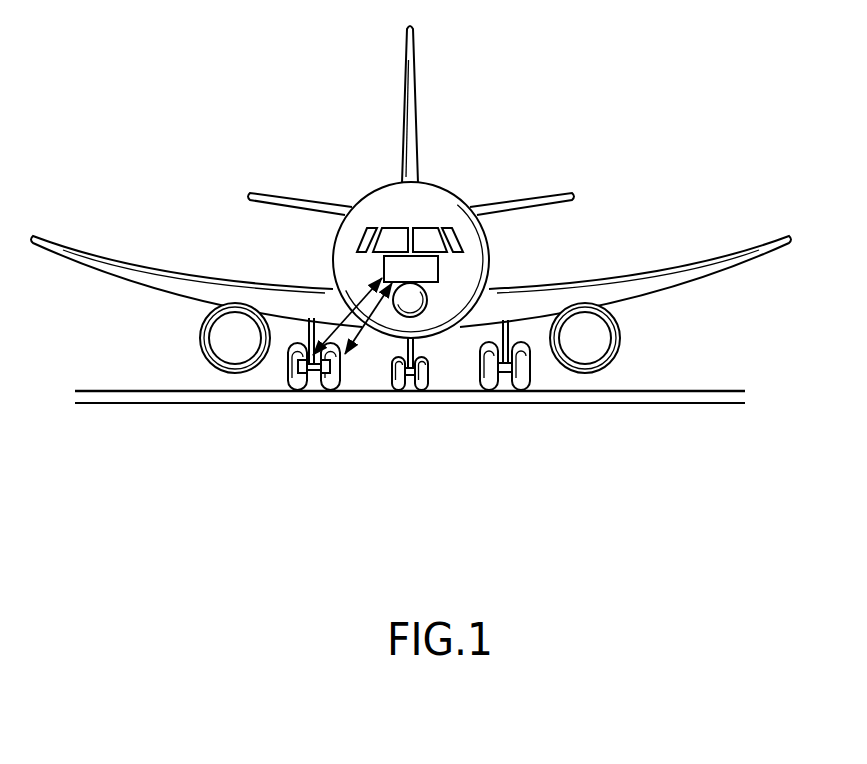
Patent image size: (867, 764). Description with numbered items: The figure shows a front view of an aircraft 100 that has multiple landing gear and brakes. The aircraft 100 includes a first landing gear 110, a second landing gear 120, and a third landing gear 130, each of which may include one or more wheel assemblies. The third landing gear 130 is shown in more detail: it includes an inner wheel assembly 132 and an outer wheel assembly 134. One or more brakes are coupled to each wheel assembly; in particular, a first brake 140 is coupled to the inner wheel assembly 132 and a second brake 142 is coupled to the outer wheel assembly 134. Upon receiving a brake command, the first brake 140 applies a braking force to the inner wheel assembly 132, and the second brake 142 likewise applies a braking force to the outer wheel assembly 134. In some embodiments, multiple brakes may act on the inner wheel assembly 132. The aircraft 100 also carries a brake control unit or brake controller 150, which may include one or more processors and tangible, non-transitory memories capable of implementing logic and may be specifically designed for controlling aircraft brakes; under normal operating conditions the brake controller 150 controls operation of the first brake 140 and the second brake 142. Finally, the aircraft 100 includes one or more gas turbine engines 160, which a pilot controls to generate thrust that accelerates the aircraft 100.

The aircraft 100 is at (268, 100).
The first landing gear 110 is at (532, 375).
The second landing gear 120 is at (430, 377).
The third landing gear 130 is at (321, 375).
The inner wheel assembly 132 is at (330, 380).
The outer wheel assembly 134 is at (296, 387).
The first brake 140 is at (345, 375).
The second brake 142 is at (298, 376).
The brake controller 150 is at (438, 270).
The gas turbine engine 160 is at (620, 335).